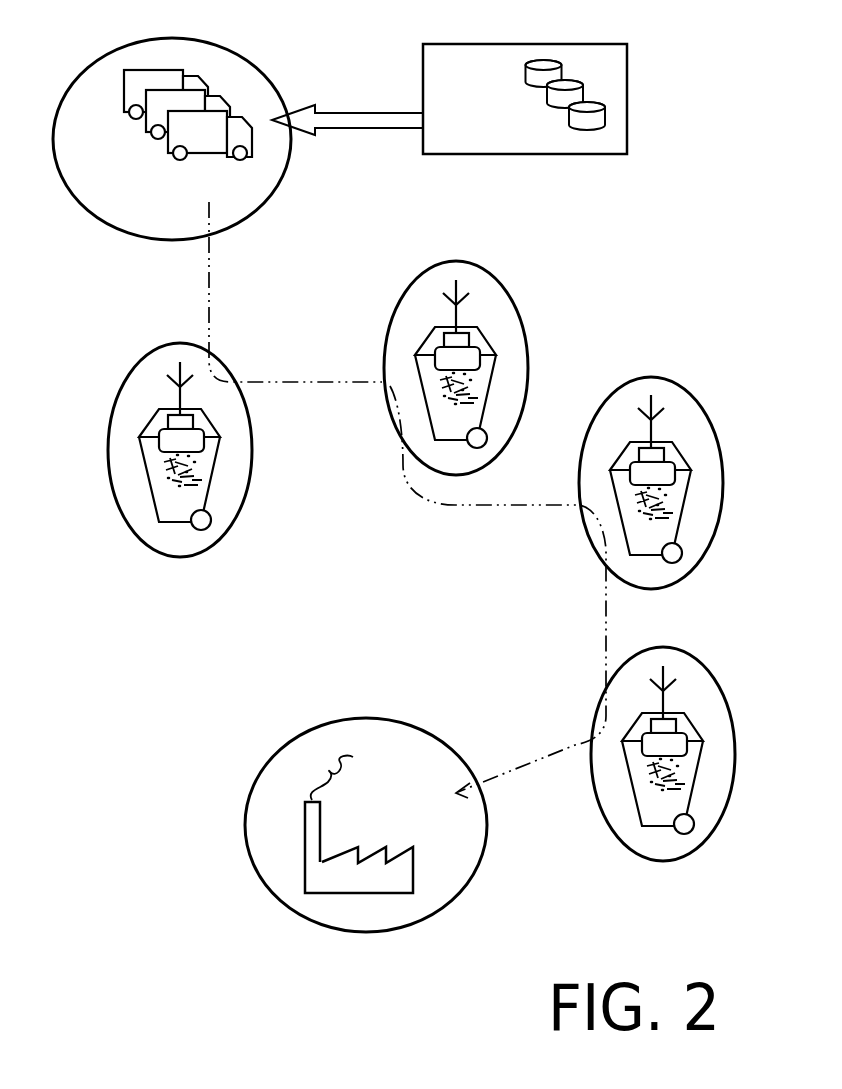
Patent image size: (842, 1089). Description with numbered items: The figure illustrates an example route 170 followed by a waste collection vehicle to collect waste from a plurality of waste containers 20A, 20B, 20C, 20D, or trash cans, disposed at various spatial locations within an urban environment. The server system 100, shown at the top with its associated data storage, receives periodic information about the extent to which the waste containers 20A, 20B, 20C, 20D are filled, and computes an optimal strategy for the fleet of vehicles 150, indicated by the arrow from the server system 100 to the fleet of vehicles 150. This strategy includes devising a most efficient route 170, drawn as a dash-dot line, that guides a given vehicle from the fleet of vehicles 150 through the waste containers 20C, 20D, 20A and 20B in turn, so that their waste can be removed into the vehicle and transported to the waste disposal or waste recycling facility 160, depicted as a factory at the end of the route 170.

The server system 100 is at (495, 87).
The fleet of vehicles 150 is at (152, 182).
The waste disposal or waste recycling facility 160 is at (415, 805).
The route 170 is at (478, 507).
The waste container 20A is at (692, 390).
The waste container 20B is at (737, 788).
The waste container 20C is at (243, 512).
The waste container 20D is at (502, 282).